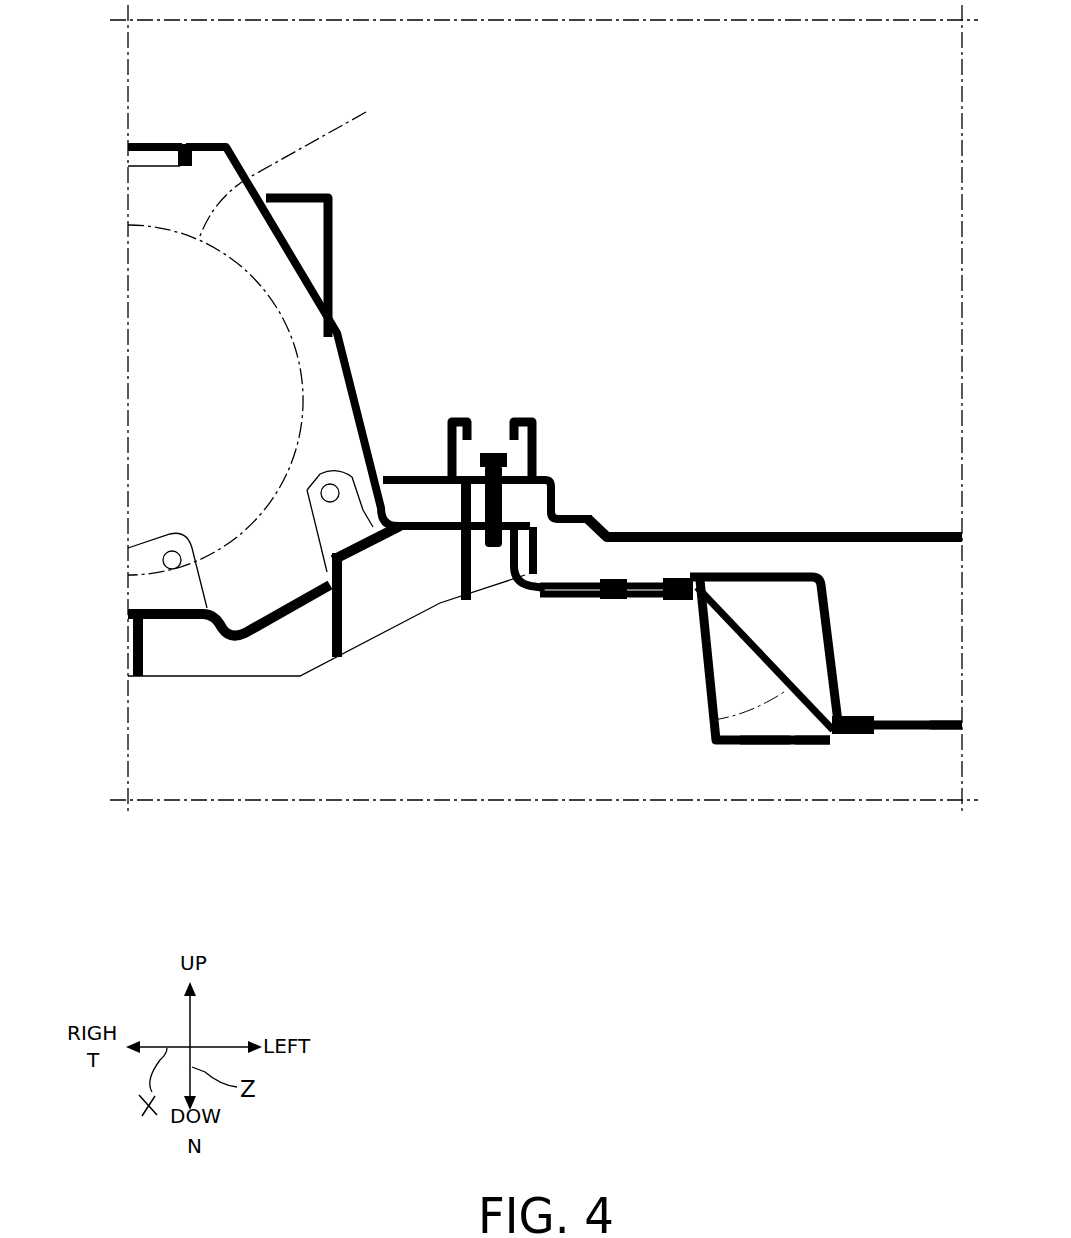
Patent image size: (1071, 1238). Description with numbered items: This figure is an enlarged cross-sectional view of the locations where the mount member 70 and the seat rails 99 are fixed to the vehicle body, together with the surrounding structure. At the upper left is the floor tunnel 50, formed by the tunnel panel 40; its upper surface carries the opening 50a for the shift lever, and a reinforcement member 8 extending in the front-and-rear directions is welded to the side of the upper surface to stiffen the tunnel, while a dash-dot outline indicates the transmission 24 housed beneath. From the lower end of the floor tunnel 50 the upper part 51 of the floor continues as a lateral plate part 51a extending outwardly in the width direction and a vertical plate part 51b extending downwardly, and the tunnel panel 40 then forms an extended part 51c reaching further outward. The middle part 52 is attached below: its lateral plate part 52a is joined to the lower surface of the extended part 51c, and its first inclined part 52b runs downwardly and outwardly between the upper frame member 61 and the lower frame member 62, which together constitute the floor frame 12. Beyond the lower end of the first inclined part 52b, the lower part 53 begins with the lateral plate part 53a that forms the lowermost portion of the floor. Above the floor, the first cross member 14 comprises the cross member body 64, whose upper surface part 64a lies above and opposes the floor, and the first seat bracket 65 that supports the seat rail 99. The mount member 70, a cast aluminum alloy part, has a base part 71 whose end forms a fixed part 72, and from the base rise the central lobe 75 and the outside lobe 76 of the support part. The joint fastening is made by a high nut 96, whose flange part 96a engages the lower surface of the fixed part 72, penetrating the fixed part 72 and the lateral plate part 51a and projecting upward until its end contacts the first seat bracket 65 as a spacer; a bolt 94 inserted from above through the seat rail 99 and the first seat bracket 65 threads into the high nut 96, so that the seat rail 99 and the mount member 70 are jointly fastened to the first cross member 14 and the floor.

The reinforcement member 8 is at (308, 196).
The floor frame 12 is at (757, 746).
The first cross member 14 is at (773, 496).
The transmission 24 is at (292, 162).
The tunnel panel 40 is at (329, 307).
The floor tunnel 50 is at (348, 356).
The opening 50a is at (153, 148).
The upper part 51 is at (518, 477).
The lateral plate part 51a is at (471, 480).
The vertical plate part 51b is at (590, 513).
The extended part 51c is at (604, 600).
The middle part 52 is at (624, 663).
The lateral plate part 52a is at (605, 597).
The first inclined part 52b is at (708, 718).
The lower part 53 is at (913, 731).
The lateral plate part 53a is at (944, 733).
The upper frame member 61 is at (838, 656).
The lower frame member 62 is at (808, 748).
The cross member body 64 is at (896, 533).
The upper surface part 64a is at (819, 530).
The first seat bracket 65 is at (403, 476).
The mount member 70 is at (326, 589).
The base part 71 is at (167, 620).
The fixed part 72 is at (455, 558).
The central lobe 75 is at (150, 544).
The outside lobe 76 is at (321, 474).
The bolt 94 is at (493, 552).
The high nut 96 is at (548, 478).
The flange part 96a is at (500, 558).
The seat rail 99 is at (443, 410).